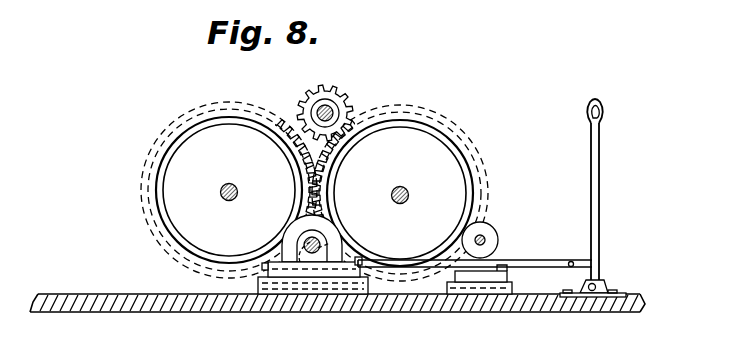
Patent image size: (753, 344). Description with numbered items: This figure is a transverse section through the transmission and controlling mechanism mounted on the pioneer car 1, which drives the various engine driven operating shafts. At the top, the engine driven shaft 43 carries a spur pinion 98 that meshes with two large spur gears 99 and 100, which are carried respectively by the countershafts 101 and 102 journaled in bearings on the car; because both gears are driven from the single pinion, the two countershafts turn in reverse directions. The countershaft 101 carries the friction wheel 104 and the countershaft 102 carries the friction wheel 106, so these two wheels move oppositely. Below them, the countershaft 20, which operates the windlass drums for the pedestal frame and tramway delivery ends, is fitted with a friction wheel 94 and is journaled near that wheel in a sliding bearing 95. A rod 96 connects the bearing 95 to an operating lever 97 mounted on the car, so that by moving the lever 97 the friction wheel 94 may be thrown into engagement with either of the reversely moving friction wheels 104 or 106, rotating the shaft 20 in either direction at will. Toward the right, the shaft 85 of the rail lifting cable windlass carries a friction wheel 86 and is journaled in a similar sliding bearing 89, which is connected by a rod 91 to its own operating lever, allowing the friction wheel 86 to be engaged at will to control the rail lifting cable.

The pioneer car 1 is at (573, 305).
The countershaft 20 is at (324, 246).
The engine driven shaft 43 is at (333, 112).
The shaft 85 is at (486, 243).
The friction wheel 86 is at (492, 232).
The sliding bearing 89 is at (500, 281).
The rod 91 is at (569, 262).
The friction wheel 94 is at (291, 240).
The sliding bearing 95 is at (312, 266).
The rod 96 is at (546, 258).
The operating lever 97 is at (600, 190).
The spur pinion 98 is at (331, 93).
The spur gear 99 is at (181, 126).
The spur gear 100 is at (480, 160).
The countershaft 101 is at (238, 195).
The countershaft 102 is at (409, 197).
The friction wheel 104 is at (180, 214).
The friction wheel 106 is at (420, 150).